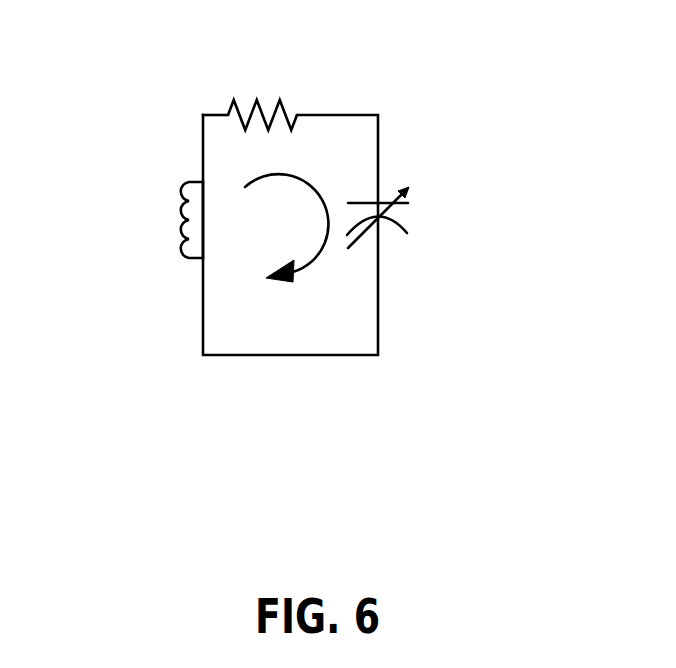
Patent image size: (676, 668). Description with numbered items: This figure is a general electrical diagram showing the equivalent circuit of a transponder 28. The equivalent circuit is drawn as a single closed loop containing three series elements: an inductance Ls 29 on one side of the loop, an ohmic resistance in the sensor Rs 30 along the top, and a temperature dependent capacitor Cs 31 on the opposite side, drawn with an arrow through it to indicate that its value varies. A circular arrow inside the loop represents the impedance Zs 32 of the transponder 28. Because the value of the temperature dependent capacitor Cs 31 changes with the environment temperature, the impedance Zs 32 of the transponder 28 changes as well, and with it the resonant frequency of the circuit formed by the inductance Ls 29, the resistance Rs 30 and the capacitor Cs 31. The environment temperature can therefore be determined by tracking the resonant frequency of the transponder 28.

The transponder 28 is at (294, 265).
The inductance Ls 29 is at (177, 232).
The ohmic resistance Rs 30 is at (295, 103).
The temperature dependent capacitor Cs 31 is at (425, 236).
The impedance Zs 32 is at (270, 315).